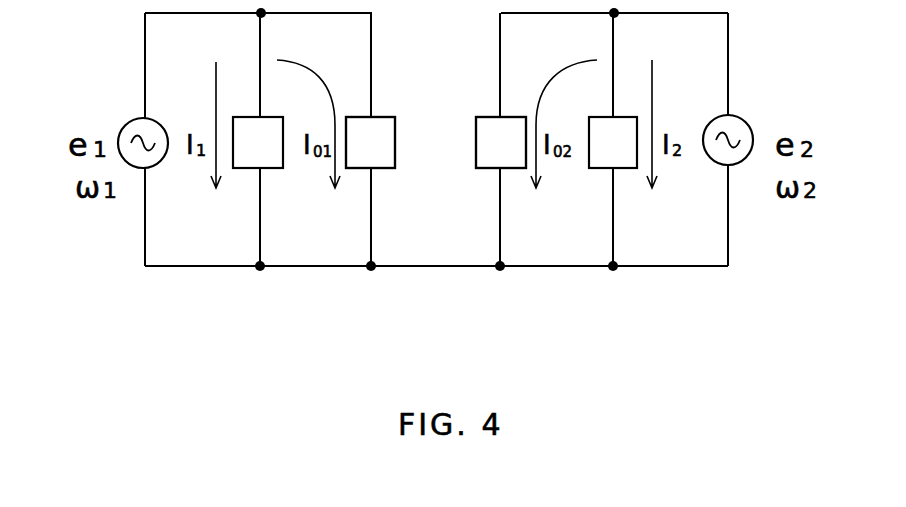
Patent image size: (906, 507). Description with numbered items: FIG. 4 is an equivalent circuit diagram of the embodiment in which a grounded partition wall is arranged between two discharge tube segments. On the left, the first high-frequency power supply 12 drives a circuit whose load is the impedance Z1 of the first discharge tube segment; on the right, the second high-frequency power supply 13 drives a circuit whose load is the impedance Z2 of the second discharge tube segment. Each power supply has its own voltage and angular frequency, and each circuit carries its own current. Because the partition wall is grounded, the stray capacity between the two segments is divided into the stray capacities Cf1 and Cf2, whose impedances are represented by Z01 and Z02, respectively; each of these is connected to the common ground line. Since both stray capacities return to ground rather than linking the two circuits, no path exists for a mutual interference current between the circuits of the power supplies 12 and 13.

The high-frequency power supply 12 is at (128, 118).
The high-frequency power supply 13 is at (745, 118).
The impedance of the discharge tube segment Z1 is at (258, 139).
The impedance of the discharge tube segment Z2 is at (613, 139).
The impedance of the stray capacity Cf1 Z01 is at (370, 139).
The impedance of the stray capacity Cf2 Z02 is at (501, 139).
The stray capacity Cf1 is at (371, 117).
The stray capacity Cf2 is at (490, 117).